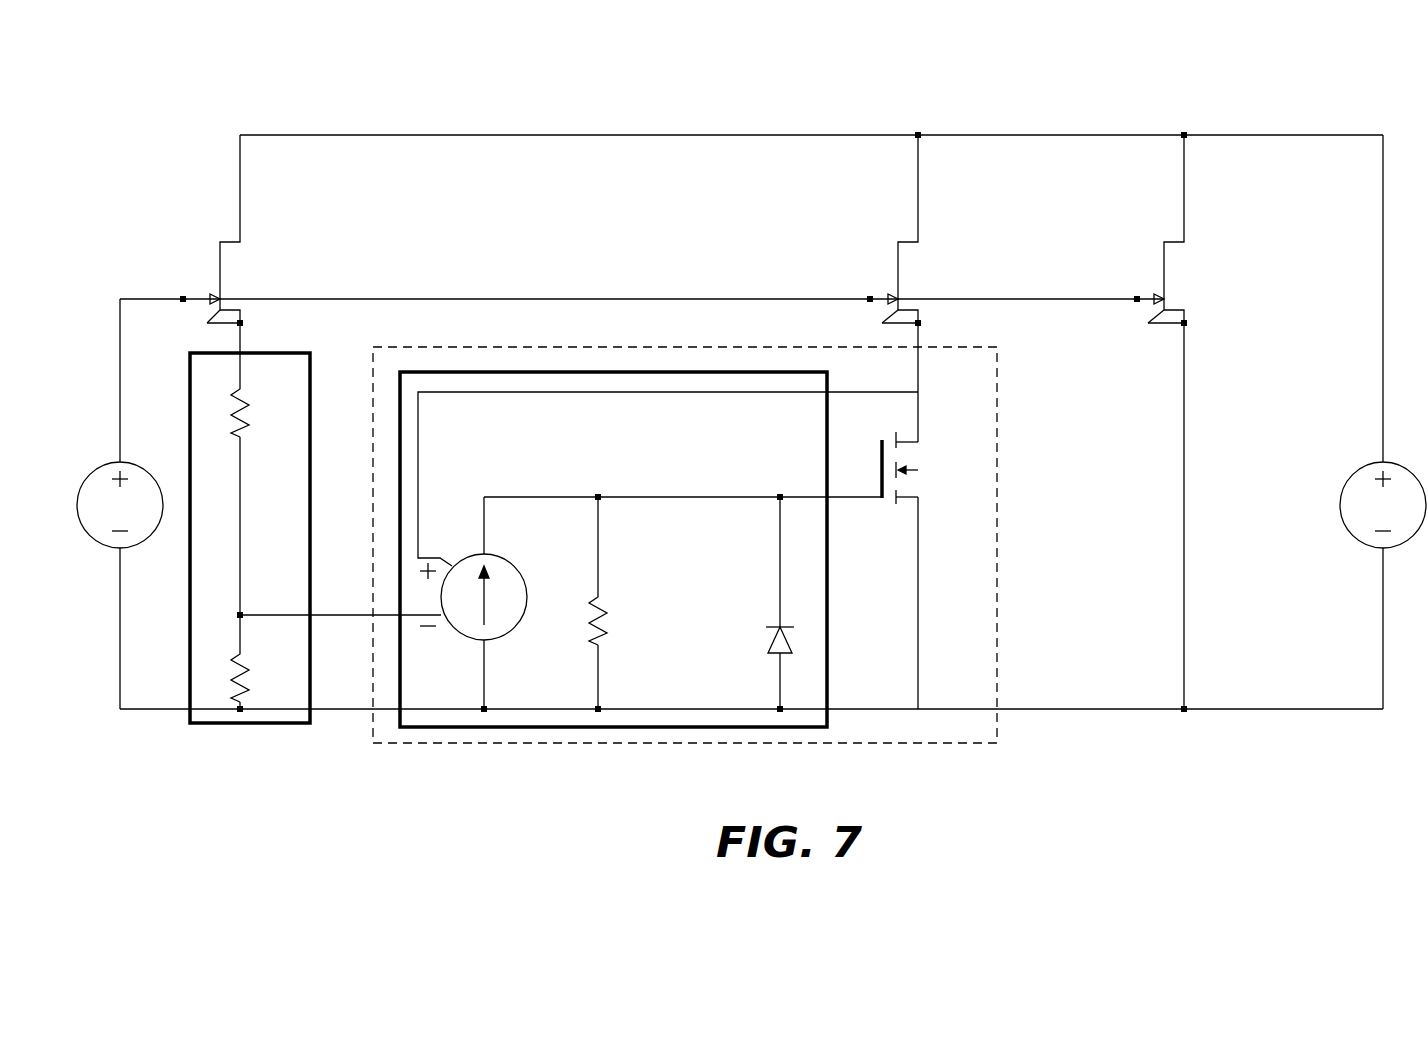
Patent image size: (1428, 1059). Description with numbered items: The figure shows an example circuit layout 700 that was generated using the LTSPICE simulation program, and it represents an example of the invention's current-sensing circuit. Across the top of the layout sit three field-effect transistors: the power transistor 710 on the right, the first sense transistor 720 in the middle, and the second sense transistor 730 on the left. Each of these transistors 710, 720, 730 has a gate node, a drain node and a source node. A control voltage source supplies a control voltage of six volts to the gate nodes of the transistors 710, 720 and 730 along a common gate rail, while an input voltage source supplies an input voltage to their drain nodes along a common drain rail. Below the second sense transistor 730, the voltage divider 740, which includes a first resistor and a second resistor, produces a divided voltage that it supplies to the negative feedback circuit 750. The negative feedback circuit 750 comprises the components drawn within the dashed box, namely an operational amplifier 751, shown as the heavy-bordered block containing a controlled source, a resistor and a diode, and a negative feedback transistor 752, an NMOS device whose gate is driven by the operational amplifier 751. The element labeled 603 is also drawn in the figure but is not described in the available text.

The example circuit layout 700 is at (826, 88).
The power transistor 710 is at (1164, 270).
The first sense transistor 720 is at (898, 270).
The second sense transistor 730 is at (220, 270).
The voltage divider 740 is at (190, 410).
The negative feedback circuit 750 is at (407, 346).
The operational amplifier 751 is at (565, 372).
The negative feedback transistor 752 is at (878, 475).
The NMOS transistor M1 603 is at (910, 550).